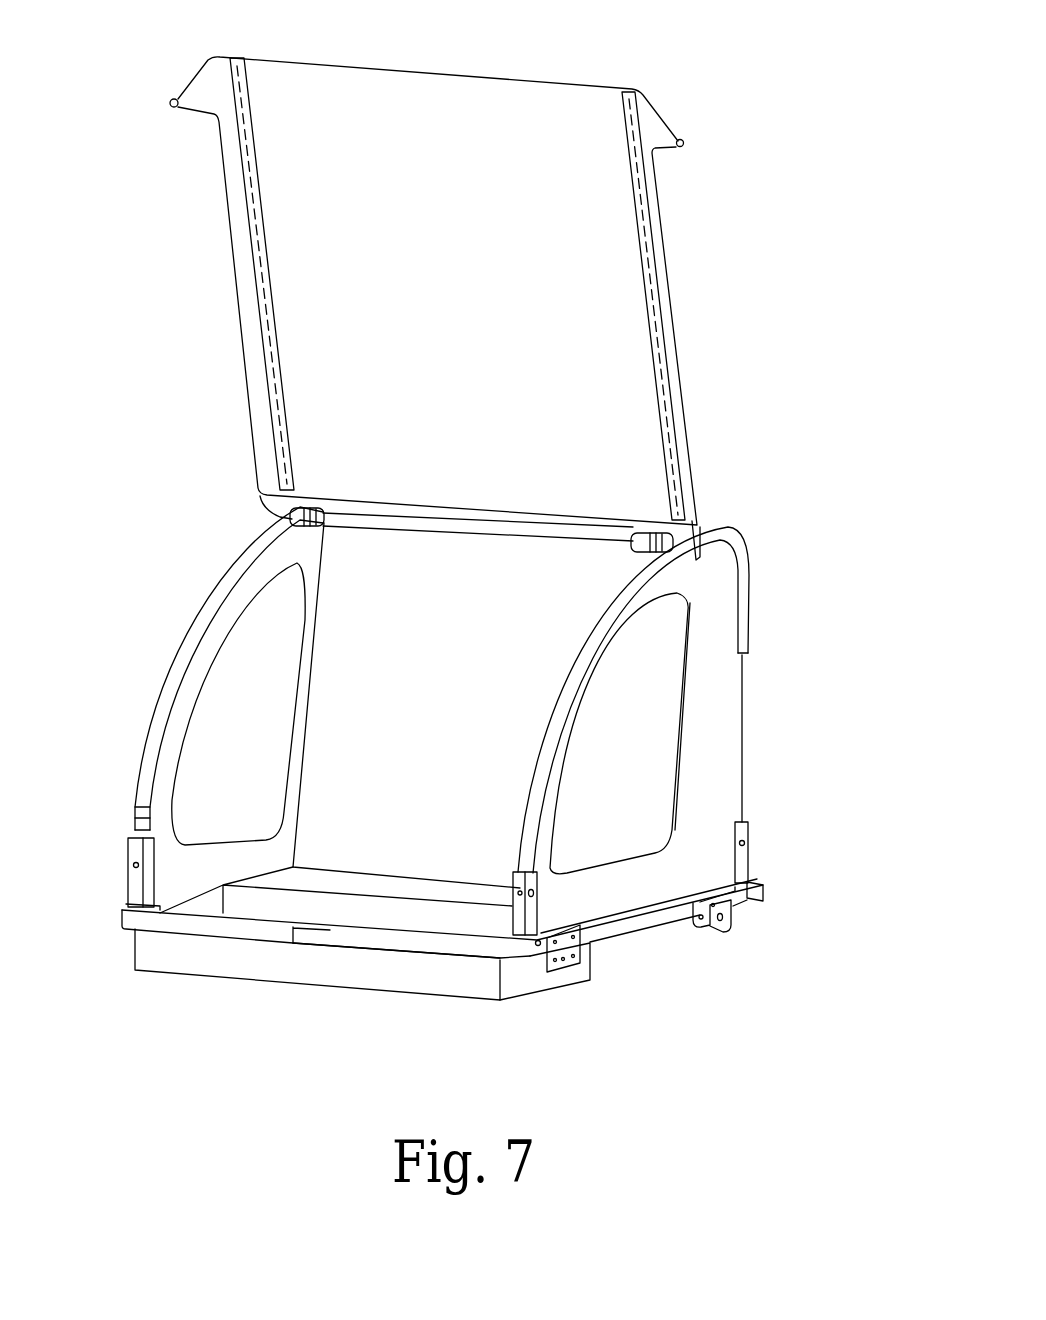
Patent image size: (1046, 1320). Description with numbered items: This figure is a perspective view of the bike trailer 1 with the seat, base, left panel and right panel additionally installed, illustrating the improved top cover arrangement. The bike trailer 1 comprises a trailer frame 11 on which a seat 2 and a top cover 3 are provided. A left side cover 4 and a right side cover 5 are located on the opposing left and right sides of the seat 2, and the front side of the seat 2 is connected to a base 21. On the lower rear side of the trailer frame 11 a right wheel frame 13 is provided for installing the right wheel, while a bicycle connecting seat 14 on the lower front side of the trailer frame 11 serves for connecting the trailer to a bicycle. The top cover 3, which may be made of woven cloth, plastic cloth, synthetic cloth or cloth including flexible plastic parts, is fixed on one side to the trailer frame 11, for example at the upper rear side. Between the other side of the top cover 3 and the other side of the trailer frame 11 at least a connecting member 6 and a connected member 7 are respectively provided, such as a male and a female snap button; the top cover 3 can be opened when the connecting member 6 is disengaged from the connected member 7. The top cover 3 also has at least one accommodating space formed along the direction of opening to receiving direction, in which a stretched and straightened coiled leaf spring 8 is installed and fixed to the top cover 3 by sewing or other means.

The bike trailer 1 is at (413, 953).
The seat 2 is at (383, 865).
The top cover 3 is at (239, 310).
The left side cover 4 is at (238, 855).
The right side cover 5 is at (698, 738).
The connecting member 6 is at (174, 99).
The connected member 7 is at (538, 947).
The coiled leaf spring 8 is at (263, 187).
The trailer frame 11 is at (363, 938).
The right wheel frame 13 is at (731, 900).
The bicycle connecting seat 14 is at (568, 968).
The base 21 is at (238, 978).